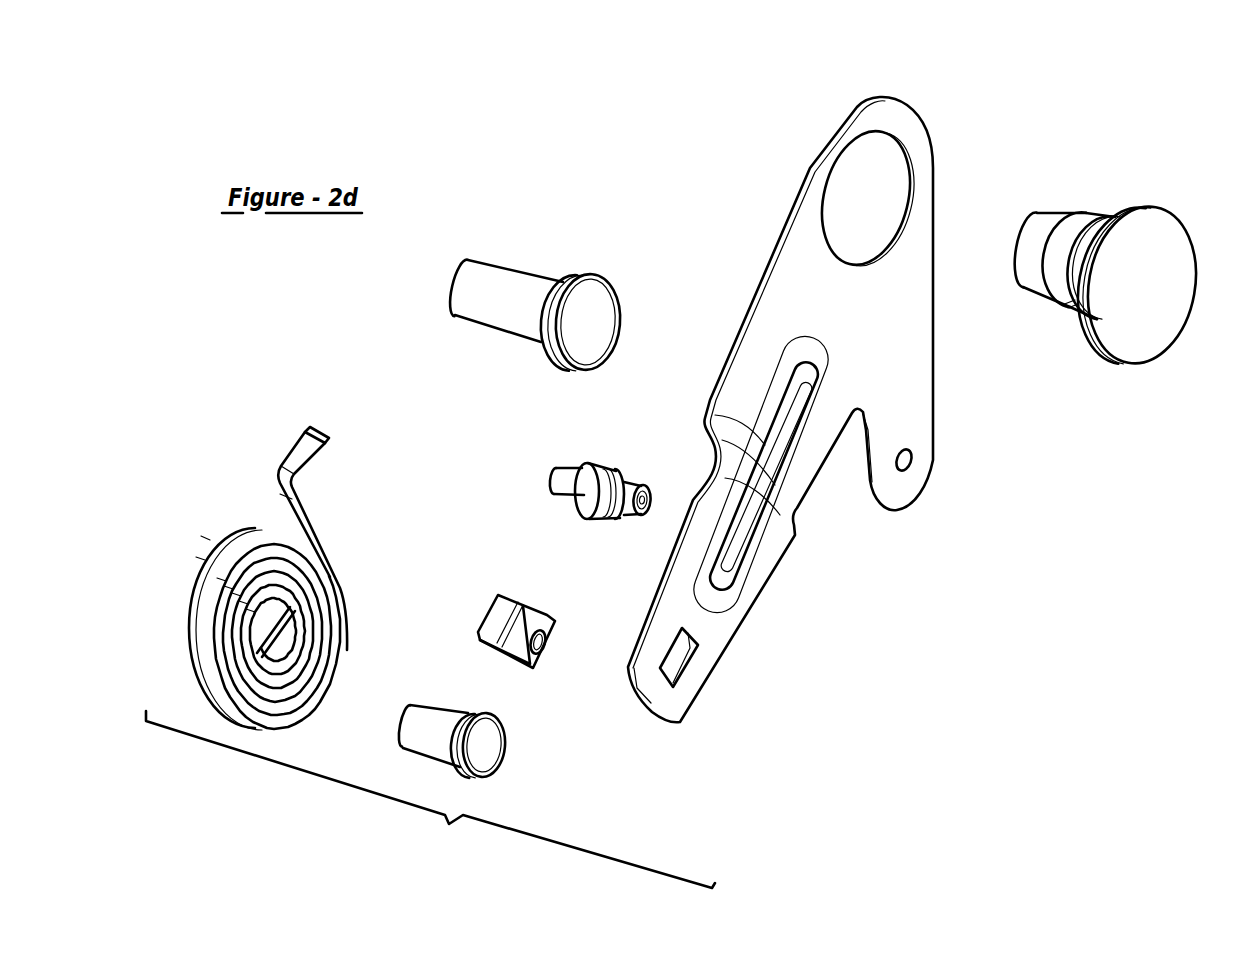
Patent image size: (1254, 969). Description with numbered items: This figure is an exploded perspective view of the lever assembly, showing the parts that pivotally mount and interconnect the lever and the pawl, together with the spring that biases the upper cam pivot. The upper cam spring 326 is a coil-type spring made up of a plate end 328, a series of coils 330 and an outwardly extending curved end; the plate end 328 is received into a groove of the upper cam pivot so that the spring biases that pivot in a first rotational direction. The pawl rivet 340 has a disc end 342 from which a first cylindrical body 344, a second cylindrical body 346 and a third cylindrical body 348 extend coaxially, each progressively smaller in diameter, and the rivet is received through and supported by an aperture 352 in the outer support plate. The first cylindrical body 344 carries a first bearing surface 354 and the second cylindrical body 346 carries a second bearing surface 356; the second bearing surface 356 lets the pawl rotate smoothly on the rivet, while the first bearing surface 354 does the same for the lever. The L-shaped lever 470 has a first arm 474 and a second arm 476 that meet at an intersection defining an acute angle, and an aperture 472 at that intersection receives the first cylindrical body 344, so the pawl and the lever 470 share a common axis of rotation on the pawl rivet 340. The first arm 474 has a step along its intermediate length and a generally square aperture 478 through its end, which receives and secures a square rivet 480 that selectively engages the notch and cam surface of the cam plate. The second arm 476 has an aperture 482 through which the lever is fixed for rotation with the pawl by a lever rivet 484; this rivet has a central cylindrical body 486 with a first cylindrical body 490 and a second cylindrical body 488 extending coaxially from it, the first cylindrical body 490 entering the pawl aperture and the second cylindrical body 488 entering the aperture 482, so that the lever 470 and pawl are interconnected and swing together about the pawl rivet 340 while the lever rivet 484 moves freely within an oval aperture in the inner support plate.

The upper cam spring 326 is at (316, 683).
The plate end 328 is at (265, 628).
The series of coils 330 is at (294, 579).
The pawl rivet 340 is at (1107, 281).
The disc end 342 is at (1103, 348).
The first cylindrical body 344 is at (1070, 307).
The second cylindrical body 346 is at (1072, 303).
The third cylindrical body 348 is at (1032, 255).
The aperture 352 is at (307, 497).
The first bearing surface 354 is at (1113, 227).
The second bearing surface 356 is at (1068, 232).
The lever 470 is at (767, 263).
The aperture 472 is at (888, 162).
The first arm 474 is at (710, 595).
The second arm 476 is at (935, 465).
The square aperture 478 is at (668, 682).
The square rivet 480 is at (492, 613).
The aperture 482 is at (860, 478).
The lever rivet 484 is at (613, 469).
The central cylindrical body 486 is at (603, 468).
The second cylindrical body 488 is at (643, 489).
The first cylindrical body 490 is at (560, 471).